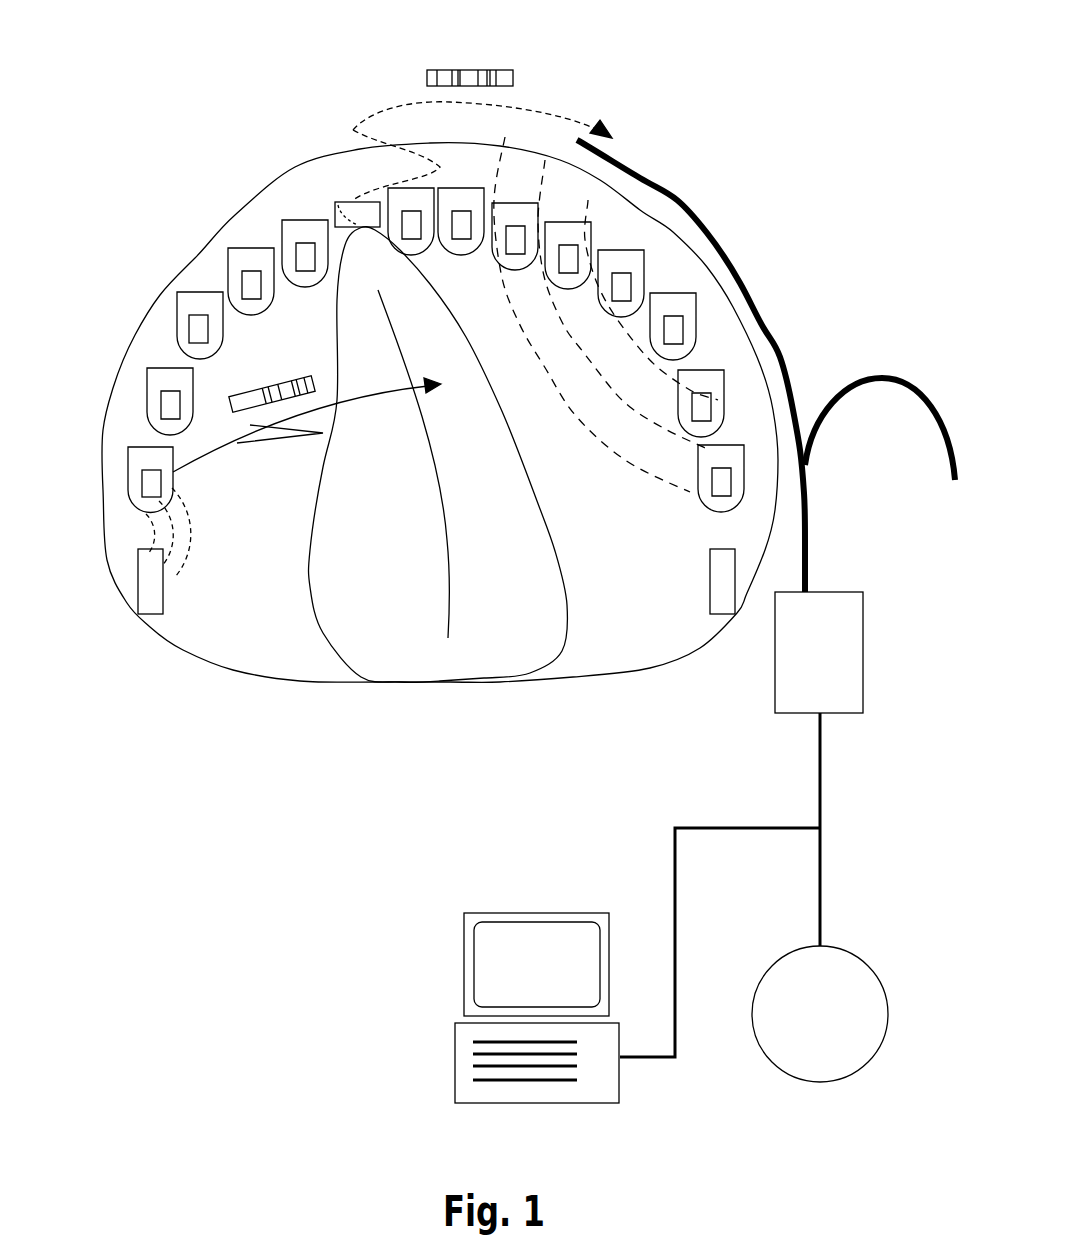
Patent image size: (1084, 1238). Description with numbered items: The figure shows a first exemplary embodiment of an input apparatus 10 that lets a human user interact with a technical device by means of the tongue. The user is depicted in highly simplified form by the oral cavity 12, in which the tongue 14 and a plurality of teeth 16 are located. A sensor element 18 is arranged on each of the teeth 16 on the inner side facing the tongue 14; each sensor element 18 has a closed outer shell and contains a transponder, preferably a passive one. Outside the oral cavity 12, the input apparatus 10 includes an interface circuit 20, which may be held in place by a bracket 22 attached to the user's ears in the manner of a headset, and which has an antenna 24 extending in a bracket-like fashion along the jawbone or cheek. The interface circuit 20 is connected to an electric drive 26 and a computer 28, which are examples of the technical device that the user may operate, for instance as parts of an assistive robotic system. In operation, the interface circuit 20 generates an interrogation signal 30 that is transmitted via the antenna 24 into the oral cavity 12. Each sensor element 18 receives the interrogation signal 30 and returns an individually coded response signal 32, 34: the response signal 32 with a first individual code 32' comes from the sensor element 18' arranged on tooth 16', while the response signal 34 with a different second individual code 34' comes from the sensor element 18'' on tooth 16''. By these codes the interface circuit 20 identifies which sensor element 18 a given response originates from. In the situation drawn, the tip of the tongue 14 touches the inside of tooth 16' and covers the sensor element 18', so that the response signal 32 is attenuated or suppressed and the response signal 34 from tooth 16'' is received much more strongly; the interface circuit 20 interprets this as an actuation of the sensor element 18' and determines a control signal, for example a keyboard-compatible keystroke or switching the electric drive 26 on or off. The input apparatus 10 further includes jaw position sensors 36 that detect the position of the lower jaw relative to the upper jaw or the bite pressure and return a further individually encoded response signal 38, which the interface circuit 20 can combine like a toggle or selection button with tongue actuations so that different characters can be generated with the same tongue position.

The input apparatus 10 is at (716, 60).
The oral cavity 12 is at (253, 650).
The tongue 14 is at (498, 642).
The teeth 16 is at (159, 318).
The tooth 16' is at (311, 186).
The tooth 16'' is at (107, 480).
The sensor element 18 is at (145, 329).
The sensor element 18' is at (331, 169).
The sensor element 18'' is at (101, 468).
The interface circuit 20 is at (864, 680).
The bracket 22 is at (890, 378).
The antenna 24 is at (700, 212).
The electric drive 26 is at (888, 1012).
The computer 28 is at (455, 1058).
The interrogation signal 30 is at (638, 470).
The response signal 32 is at (482, 124).
The individual code 32' is at (470, 44).
The response signal 34 is at (307, 448).
The individual code 34' is at (272, 367).
The jaw position sensor 36 is at (140, 597).
The response signal 38 is at (207, 577).